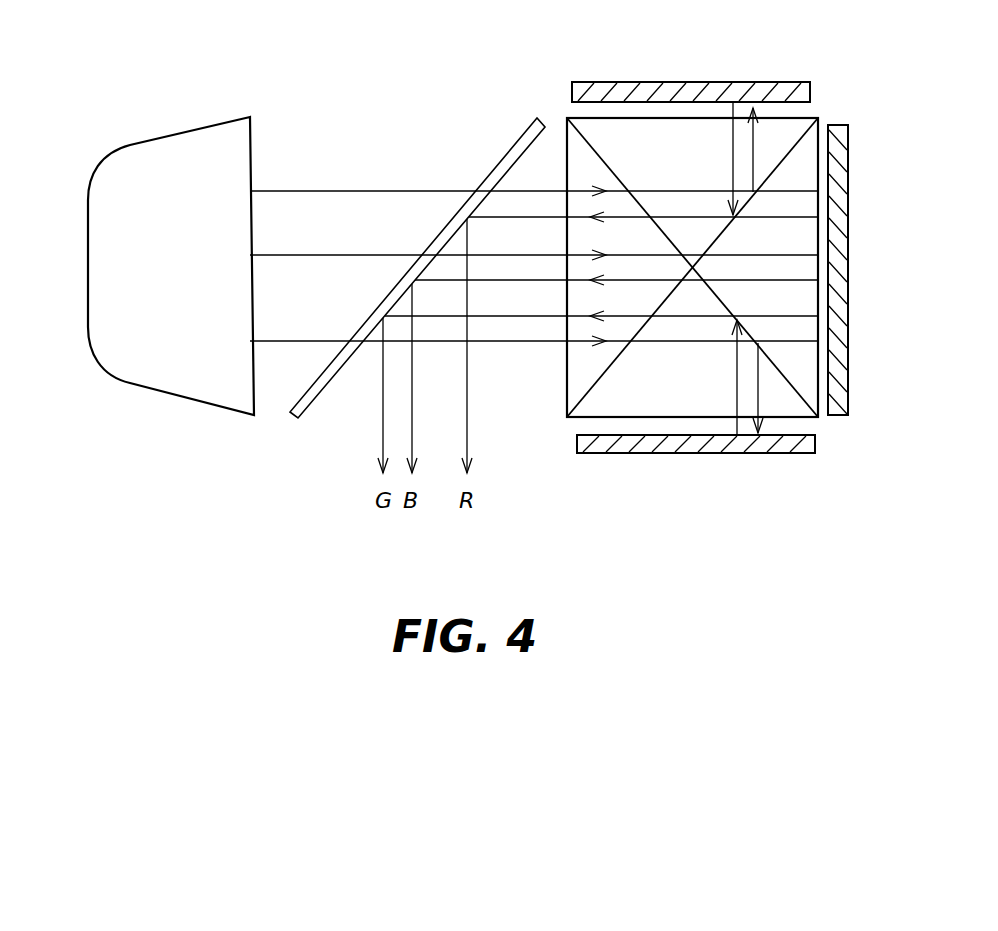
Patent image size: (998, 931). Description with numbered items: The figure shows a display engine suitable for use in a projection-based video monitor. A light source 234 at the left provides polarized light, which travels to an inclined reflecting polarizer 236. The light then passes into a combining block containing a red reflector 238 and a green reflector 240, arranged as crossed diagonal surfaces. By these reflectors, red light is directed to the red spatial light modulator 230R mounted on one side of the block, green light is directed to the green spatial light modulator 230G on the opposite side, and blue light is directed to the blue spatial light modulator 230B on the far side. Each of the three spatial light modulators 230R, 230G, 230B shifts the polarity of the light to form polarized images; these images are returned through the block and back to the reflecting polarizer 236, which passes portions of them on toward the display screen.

The light source 234 is at (196, 228).
The reflecting polarizer 236 is at (506, 148).
The red reflector 238 is at (788, 150).
The green reflector 240 is at (788, 382).
The red spatial light modulator 230R is at (663, 82).
The green spatial light modulator 230G is at (678, 455).
The blue spatial light modulator 230B is at (850, 267).